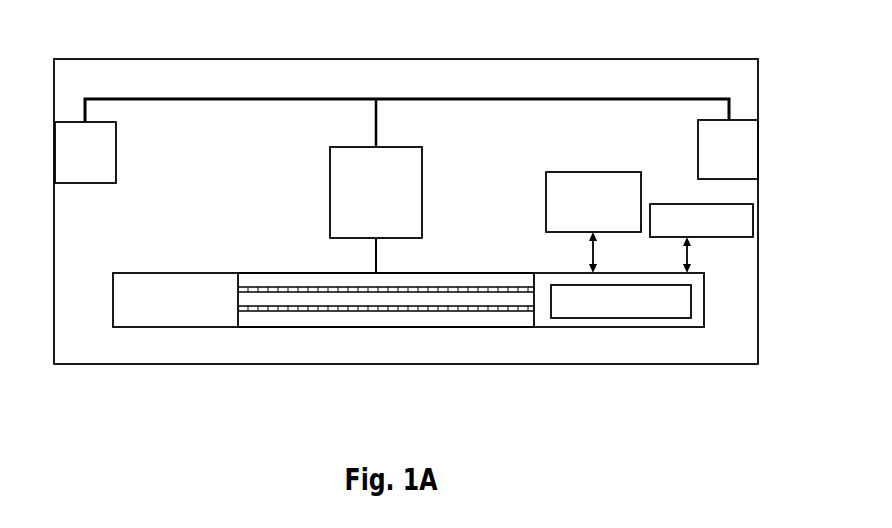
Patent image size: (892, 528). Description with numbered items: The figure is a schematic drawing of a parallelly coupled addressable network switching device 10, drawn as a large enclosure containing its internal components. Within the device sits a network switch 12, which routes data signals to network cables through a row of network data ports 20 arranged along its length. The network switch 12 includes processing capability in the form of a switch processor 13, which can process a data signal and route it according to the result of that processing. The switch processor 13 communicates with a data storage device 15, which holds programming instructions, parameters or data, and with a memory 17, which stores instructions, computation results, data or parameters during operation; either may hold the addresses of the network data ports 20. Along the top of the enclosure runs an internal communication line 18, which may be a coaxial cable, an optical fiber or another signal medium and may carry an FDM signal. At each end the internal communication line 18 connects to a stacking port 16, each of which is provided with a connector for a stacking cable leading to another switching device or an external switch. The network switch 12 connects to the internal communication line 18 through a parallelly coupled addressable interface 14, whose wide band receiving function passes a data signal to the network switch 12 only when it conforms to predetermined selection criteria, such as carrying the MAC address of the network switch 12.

The parallelly coupled addressable network switching device 10 is at (283, 59).
The network switch 12 is at (182, 327).
The switch processor 13 is at (632, 323).
The parallelly coupled addressable interface 14 is at (423, 191).
The data storage device 15 is at (597, 168).
The stacking port 16 is at (117, 158).
The memory 17 is at (705, 203).
The internal communication line 18 is at (325, 102).
The network data ports 20 is at (448, 311).